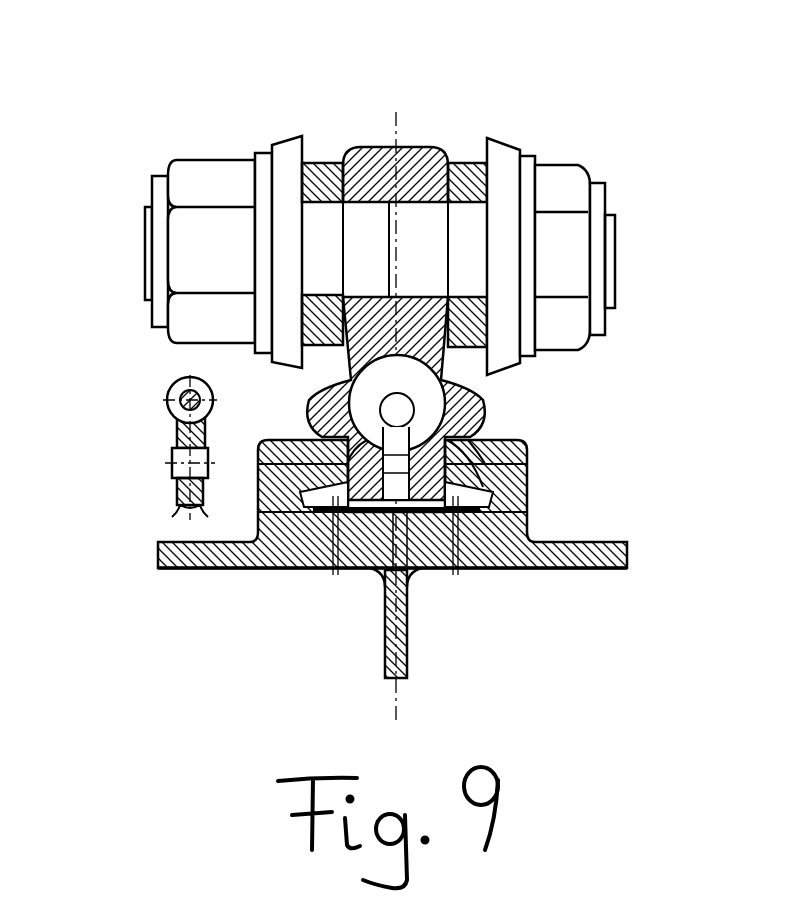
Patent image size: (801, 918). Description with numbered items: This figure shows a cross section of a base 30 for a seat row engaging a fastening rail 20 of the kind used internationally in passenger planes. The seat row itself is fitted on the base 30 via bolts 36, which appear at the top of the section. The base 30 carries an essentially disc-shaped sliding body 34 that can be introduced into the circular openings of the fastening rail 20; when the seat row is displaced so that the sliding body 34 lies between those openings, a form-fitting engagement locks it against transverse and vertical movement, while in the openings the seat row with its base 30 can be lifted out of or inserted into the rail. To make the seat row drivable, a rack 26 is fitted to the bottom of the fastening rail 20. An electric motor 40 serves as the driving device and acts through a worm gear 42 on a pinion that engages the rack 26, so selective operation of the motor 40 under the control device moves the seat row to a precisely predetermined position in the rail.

The fastening rail 20 is at (617, 543).
The rack 26 is at (437, 568).
The base 30 is at (443, 147).
The sliding body 34 is at (492, 442).
The bolts 36 is at (612, 165).
The electric motor 40 is at (445, 377).
The worm gear 42 is at (347, 385).